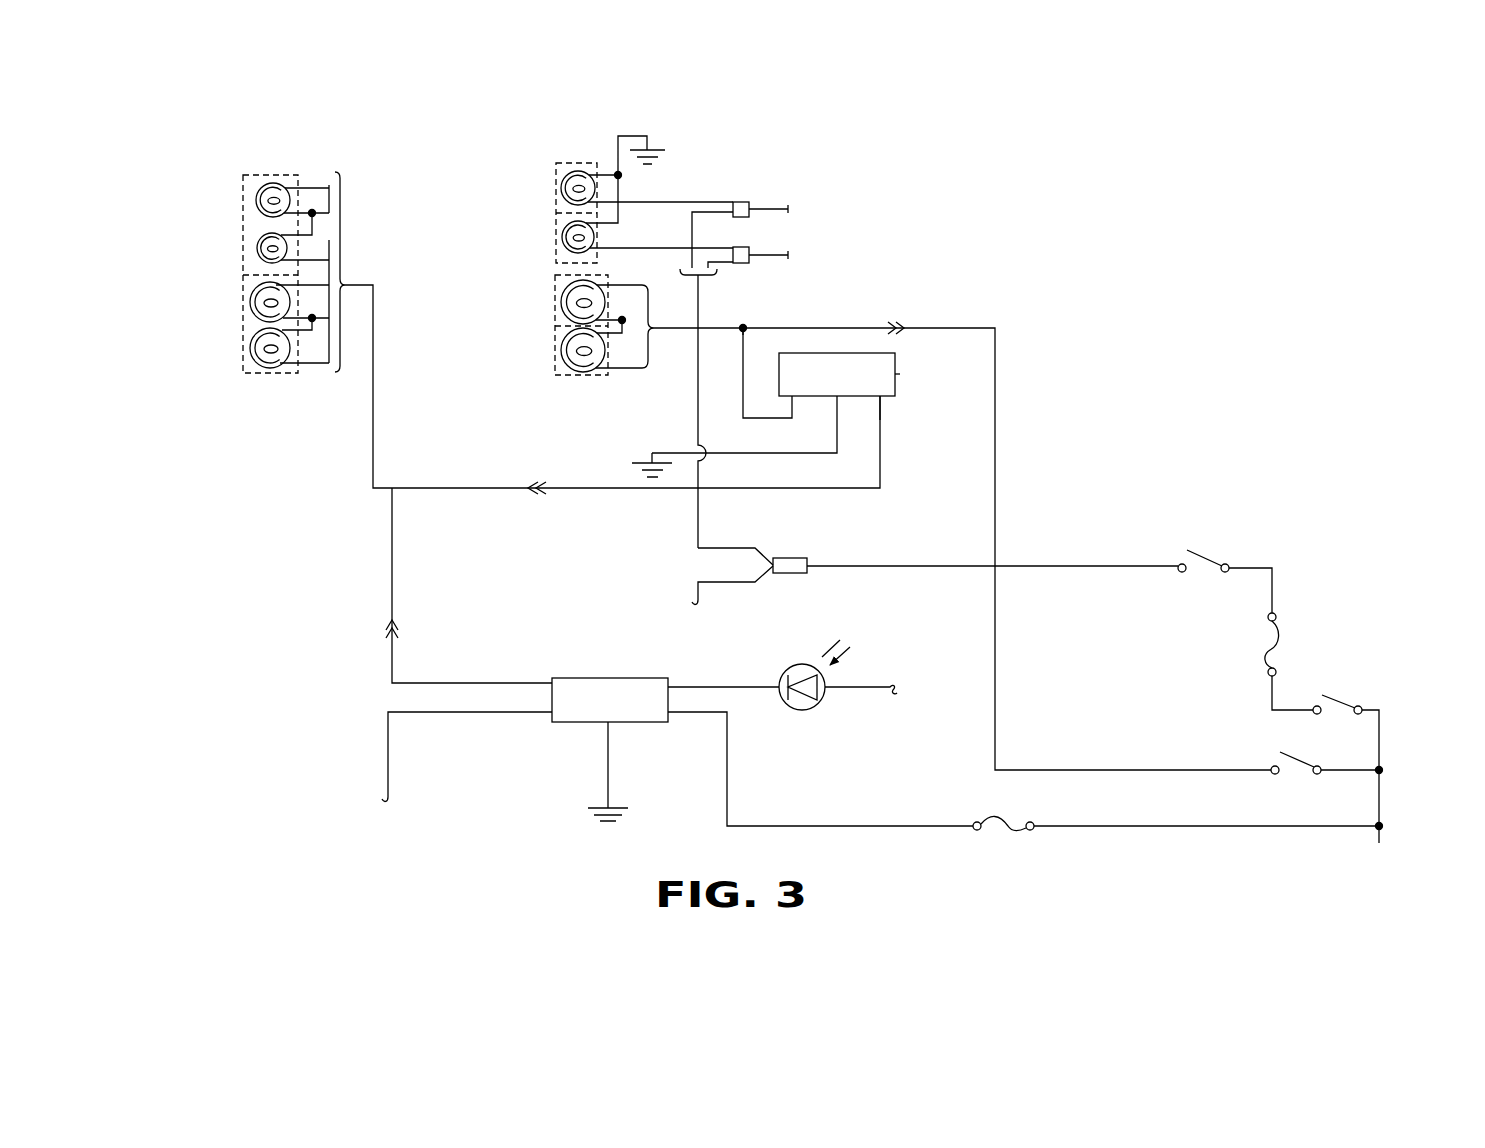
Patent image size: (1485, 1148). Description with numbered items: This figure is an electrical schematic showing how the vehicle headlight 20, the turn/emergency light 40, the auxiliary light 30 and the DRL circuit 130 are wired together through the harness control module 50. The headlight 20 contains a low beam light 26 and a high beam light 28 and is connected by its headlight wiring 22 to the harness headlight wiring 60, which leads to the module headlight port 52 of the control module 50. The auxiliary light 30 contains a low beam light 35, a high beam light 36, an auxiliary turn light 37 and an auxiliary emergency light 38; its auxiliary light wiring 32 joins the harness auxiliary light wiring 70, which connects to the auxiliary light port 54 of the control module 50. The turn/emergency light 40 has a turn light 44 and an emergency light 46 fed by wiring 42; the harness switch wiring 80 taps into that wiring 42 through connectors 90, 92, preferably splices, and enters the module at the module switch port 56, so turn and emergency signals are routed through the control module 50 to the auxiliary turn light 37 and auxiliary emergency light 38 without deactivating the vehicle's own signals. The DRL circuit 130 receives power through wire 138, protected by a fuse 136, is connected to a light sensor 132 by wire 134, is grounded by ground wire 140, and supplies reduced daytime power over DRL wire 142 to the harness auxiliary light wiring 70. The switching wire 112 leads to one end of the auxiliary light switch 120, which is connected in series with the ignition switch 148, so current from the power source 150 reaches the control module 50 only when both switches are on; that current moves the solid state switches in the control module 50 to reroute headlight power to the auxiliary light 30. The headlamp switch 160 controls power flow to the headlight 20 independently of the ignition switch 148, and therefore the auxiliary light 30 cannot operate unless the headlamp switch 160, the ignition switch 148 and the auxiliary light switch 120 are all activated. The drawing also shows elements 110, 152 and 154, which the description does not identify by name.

The headlight 20 is at (546, 322).
The headlight wiring 22 is at (713, 327).
The low beam light 26 is at (561, 296).
The high beam light 28 is at (561, 355).
The auxiliary light 30 is at (228, 270).
The auxiliary light wiring 32 is at (372, 458).
The low beam light 35 is at (250, 352).
The high beam light 36 is at (250, 304).
The auxiliary turn light 37 is at (256, 196).
The auxiliary emergency light 38 is at (257, 248).
The turn/emergency light 40 is at (548, 206).
The turn/emergency light wiring 42 is at (657, 250).
The turn light 44 is at (561, 183).
The emergency light 46 is at (562, 238).
The harness control module 50 is at (882, 373).
The module headlight port 52 is at (795, 397).
The auxiliary light port 54 is at (882, 398).
The module switch port 56 is at (837, 398).
The harness headlight wiring 60 is at (758, 417).
The harness auxiliary light wiring 70 is at (625, 490).
The harness switch wiring 80 is at (838, 453).
The connector 90 is at (741, 202).
The connector 92 is at (740, 250).
The diode 110 is at (792, 558).
The switching wire 112 is at (1038, 566).
The auxiliary light switch 120 is at (1220, 573).
The DRL circuit 130 is at (605, 678).
The light sensor 132 is at (803, 712).
The light sensor wire 134 is at (708, 682).
The fuse 136 is at (1017, 833).
The power wire 138 is at (850, 826).
The ground wire 140 is at (608, 780).
The DRL wire 142 is at (433, 683).
The ignition switch 148 is at (1362, 715).
The power source 150 is at (1377, 843).
The circuit breaker 152 is at (1280, 633).
The wire 154 is at (1382, 833).
The headlamp switch 160 is at (1318, 765).